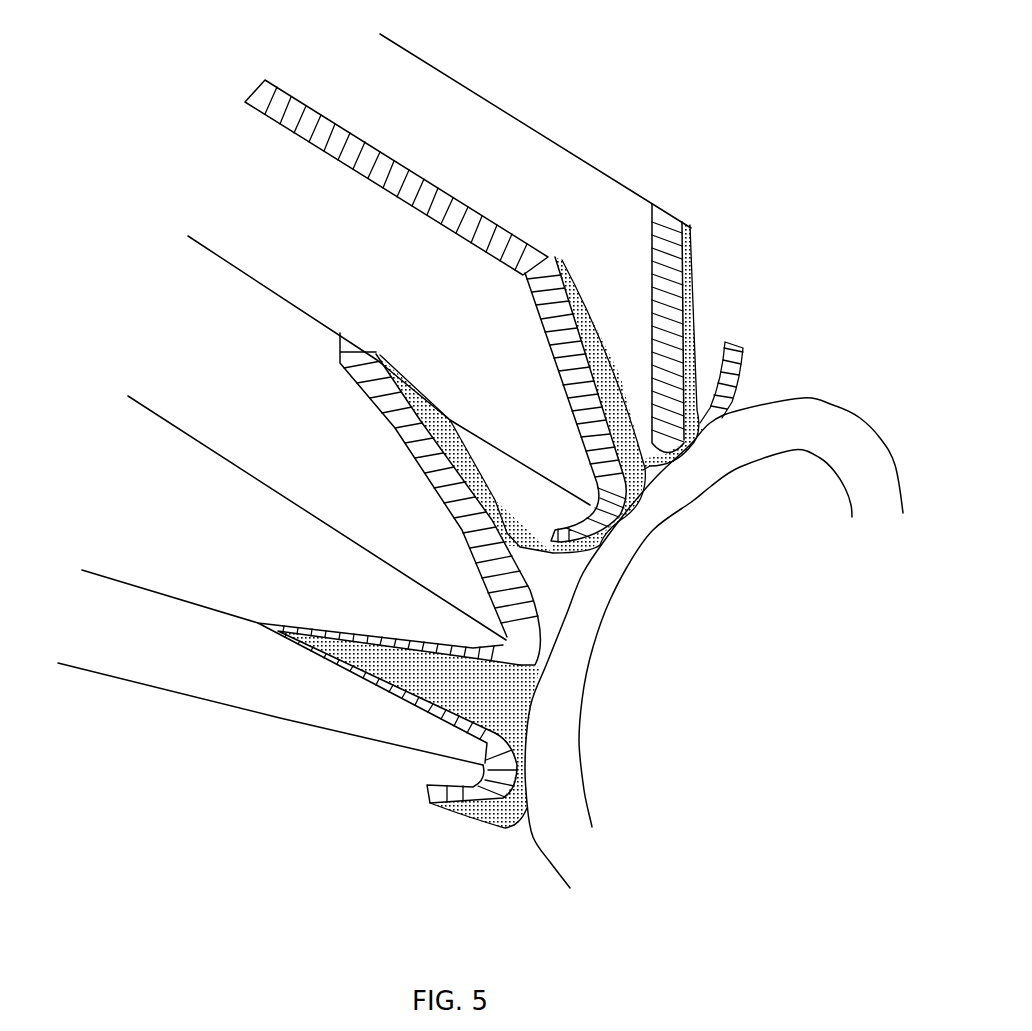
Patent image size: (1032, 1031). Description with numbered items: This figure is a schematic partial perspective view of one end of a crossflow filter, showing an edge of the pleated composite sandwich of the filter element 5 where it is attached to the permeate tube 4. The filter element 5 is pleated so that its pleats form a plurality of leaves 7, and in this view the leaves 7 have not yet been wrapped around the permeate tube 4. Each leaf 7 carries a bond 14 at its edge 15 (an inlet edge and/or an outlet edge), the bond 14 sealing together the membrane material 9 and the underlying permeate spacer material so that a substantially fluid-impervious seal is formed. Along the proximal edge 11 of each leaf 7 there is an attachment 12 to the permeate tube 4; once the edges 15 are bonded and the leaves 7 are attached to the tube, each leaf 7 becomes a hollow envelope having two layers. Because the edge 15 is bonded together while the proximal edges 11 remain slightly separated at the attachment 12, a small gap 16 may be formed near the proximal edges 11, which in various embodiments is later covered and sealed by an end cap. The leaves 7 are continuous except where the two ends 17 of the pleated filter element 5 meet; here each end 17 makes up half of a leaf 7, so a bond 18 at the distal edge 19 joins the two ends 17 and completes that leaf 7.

The permeate tube 4 is at (557, 837).
The filter element 5 is at (192, 186).
The leaf 7 is at (266, 435).
The membrane material 9 is at (167, 317).
The proximal edge 11 is at (642, 526).
The attachment 12 is at (242, 470).
The bond 14 is at (373, 632).
The edge 15 is at (717, 291).
The gap 16 is at (575, 572).
The end 17 is at (249, 151).
The bond 18 is at (450, 218).
The distal edge 19 is at (549, 109).